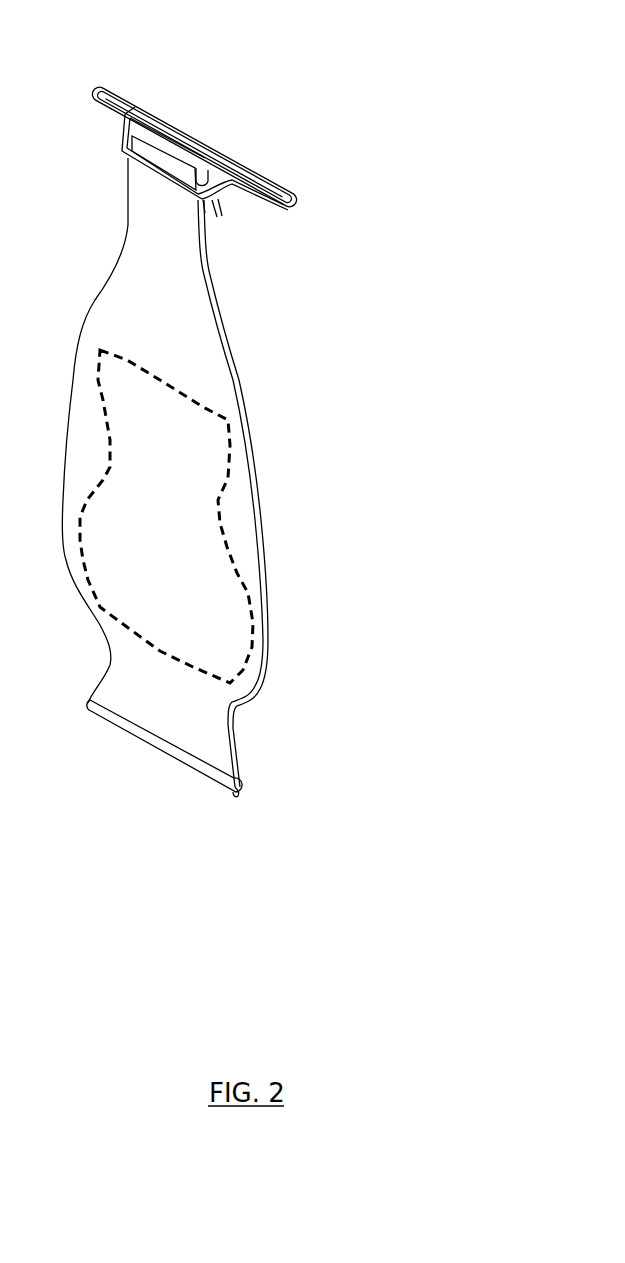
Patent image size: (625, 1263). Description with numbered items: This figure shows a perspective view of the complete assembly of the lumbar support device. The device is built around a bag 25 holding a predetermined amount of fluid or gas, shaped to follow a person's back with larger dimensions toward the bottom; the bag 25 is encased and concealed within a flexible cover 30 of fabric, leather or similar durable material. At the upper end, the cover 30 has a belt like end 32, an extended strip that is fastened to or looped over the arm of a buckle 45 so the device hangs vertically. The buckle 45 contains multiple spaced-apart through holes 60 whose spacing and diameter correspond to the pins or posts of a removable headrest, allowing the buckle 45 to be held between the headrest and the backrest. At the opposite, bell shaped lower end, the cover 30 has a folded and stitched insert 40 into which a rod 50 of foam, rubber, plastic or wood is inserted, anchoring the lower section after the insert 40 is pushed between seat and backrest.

The bag 25 is at (228, 590).
The flexible cover 30 is at (185, 370).
The belt like end 32 is at (226, 198).
The insert 40 is at (152, 738).
The buckle 45 is at (236, 160).
The rod 50 is at (238, 788).
The through holes 60 is at (158, 120).